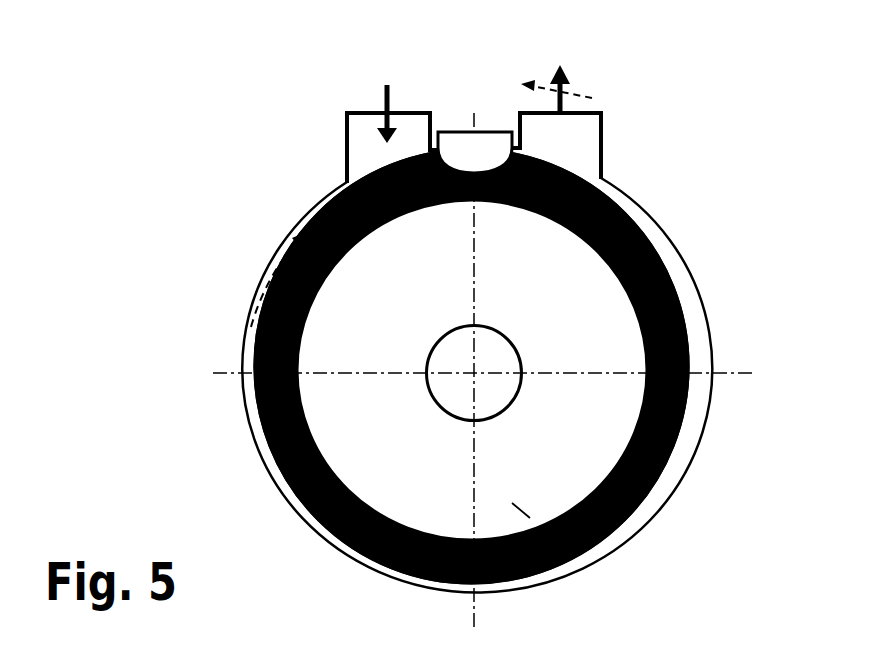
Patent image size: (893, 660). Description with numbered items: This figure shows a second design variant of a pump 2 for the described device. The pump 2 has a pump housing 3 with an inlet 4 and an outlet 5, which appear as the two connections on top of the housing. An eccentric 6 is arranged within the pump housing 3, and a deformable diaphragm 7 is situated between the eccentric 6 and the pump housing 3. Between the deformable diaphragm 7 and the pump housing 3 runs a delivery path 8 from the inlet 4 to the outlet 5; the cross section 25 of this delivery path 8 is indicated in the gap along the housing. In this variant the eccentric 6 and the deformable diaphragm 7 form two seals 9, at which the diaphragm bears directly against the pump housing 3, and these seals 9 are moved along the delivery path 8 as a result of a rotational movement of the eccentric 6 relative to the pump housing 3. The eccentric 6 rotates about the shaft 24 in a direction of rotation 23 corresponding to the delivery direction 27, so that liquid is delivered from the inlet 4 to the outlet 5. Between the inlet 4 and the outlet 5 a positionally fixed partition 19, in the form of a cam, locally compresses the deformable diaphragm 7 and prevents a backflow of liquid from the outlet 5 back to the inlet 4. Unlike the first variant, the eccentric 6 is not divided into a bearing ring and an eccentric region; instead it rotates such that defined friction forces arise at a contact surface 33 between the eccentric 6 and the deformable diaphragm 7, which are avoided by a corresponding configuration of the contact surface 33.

The pump 2 is at (254, 168).
The pump housing 3 is at (238, 340).
The inlet 4 is at (358, 110).
The outlet 5 is at (533, 112).
The eccentric 6 is at (583, 540).
The deformable diaphragm 7 is at (683, 293).
The delivery path 8 is at (693, 377).
The seal 9 is at (606, 180).
The partition 19 is at (463, 130).
The direction of rotation 23 is at (576, 95).
The shaft 24 is at (476, 376).
The cross section of the delivery path 25 is at (287, 251).
The delivery direction 27 is at (387, 85).
The contact surface 33 is at (653, 453).